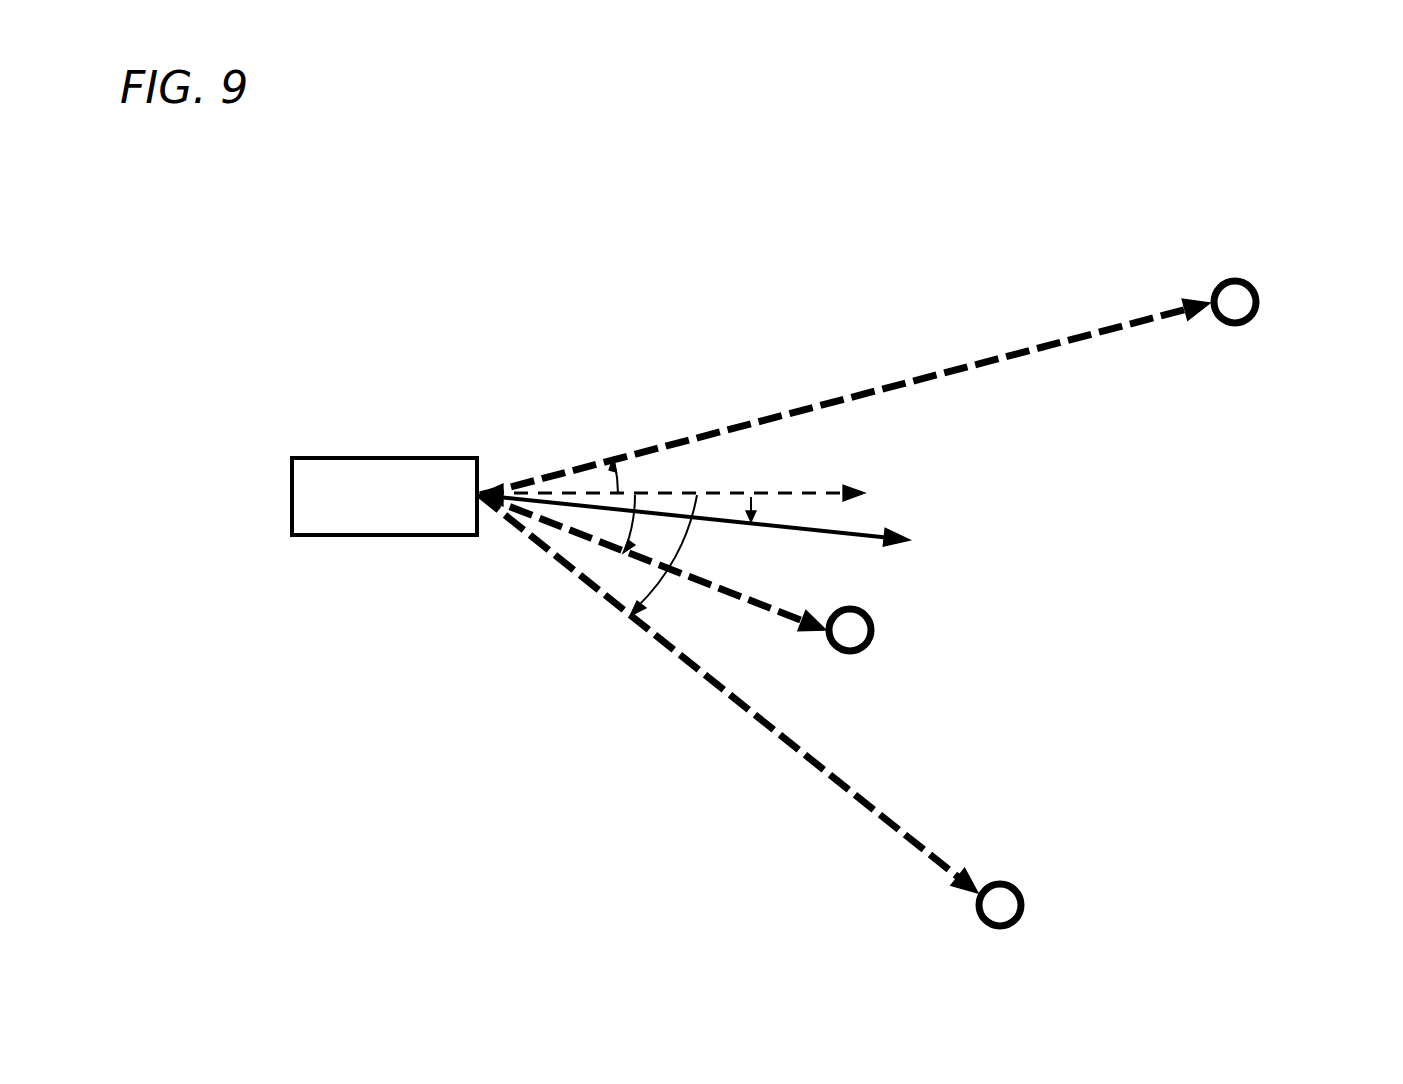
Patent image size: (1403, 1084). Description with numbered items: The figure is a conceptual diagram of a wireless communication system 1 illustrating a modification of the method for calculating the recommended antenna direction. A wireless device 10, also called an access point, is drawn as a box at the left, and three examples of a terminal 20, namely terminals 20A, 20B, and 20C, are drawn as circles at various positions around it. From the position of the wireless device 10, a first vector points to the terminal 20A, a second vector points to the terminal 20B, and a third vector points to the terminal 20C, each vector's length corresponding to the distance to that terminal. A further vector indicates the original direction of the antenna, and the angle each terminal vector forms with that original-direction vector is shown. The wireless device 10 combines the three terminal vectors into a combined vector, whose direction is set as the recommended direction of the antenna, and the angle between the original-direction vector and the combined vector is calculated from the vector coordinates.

The wireless communication system 1 is at (838, 143).
The wireless device 10 is at (389, 457).
The terminal 20 is at (925, 558).
The terminal 20A is at (1243, 280).
The terminal 20B is at (872, 632).
The terminal 20C is at (1010, 880).